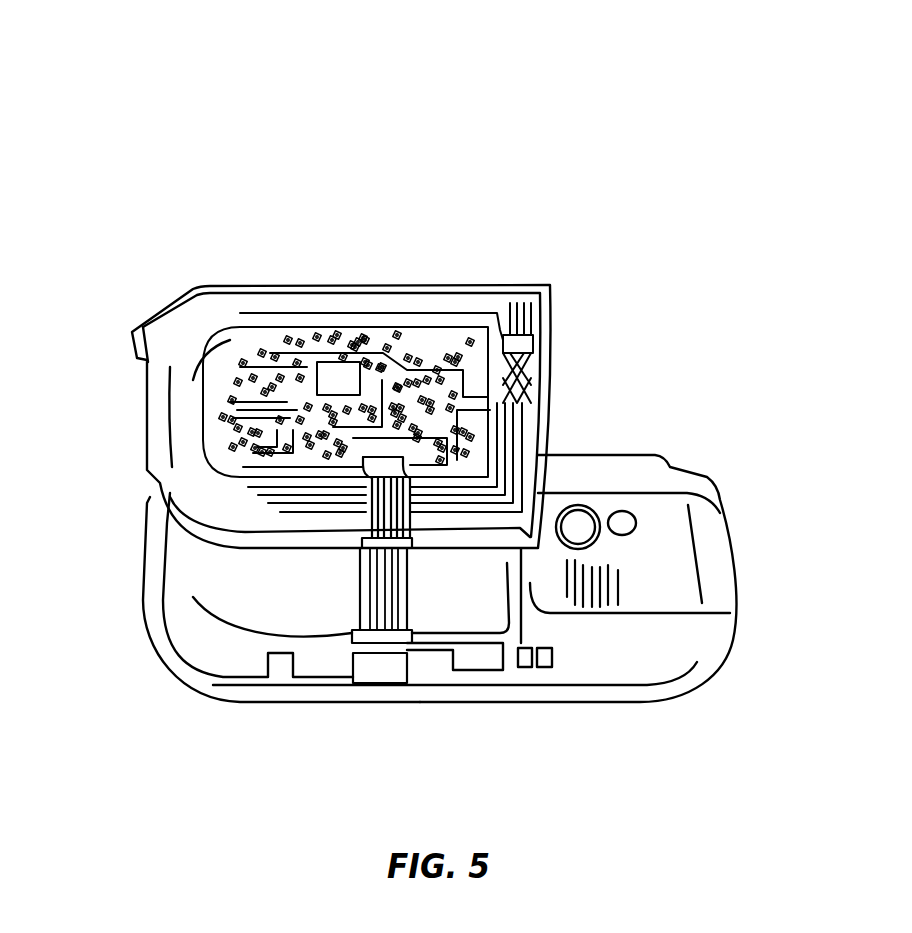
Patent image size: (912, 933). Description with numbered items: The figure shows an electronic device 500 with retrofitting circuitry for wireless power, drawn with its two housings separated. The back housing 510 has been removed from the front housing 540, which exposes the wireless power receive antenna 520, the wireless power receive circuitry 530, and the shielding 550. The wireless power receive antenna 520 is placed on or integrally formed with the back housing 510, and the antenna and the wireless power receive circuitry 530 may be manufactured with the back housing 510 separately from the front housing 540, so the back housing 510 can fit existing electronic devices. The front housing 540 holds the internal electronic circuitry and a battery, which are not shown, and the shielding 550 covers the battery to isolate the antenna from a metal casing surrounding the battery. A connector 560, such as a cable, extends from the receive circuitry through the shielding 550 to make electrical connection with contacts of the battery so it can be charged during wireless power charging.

The electronic device 500 is at (147, 79).
The back housing 510 is at (183, 290).
The wireless power receive antenna 520 is at (527, 385).
The wireless power receive circuitry 530 is at (405, 342).
The front housing 540 is at (693, 663).
The shielding 550 is at (210, 633).
The connector 560 is at (370, 612).